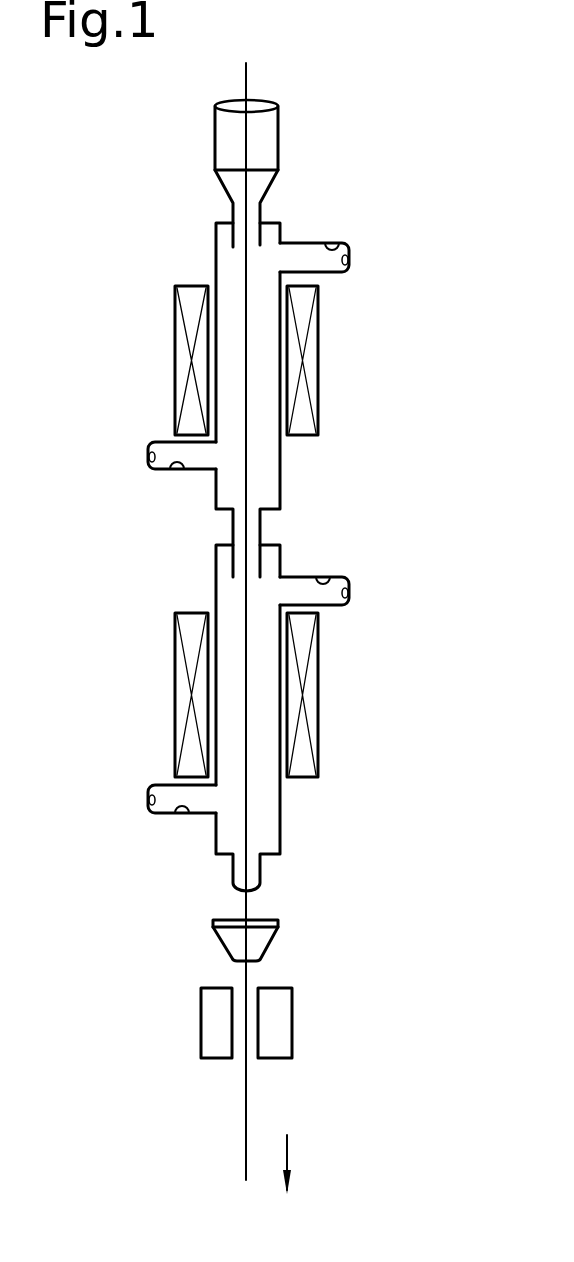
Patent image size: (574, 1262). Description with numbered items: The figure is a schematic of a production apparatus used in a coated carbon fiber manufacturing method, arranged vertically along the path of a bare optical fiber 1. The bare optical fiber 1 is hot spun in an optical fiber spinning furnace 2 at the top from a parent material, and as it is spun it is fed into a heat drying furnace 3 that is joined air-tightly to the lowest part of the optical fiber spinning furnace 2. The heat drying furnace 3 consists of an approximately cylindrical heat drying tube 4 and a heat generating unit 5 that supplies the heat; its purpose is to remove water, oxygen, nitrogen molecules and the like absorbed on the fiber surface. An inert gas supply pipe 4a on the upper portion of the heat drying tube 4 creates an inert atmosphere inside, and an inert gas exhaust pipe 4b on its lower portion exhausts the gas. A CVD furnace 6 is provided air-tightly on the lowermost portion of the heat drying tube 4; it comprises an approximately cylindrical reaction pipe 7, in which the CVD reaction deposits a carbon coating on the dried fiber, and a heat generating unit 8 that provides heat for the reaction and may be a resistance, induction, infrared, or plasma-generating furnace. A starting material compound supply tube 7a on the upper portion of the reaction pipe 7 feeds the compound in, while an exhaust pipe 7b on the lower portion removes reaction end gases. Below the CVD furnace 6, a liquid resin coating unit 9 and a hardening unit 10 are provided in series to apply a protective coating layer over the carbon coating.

The bare optical fiber 1 is at (248, 183).
The optical fiber spinning furnace 2 is at (278, 130).
The heat drying furnace 3 is at (84, 253).
The heat drying tube 4 is at (223, 260).
The inert gas supply pipe 4a is at (342, 243).
The inert gas exhaust pipe 4b is at (163, 470).
The heat generating unit 5 is at (183, 350).
The CVD furnace 6 is at (88, 708).
The reaction pipe 7 is at (223, 598).
The starting material compound supply tube 7a is at (330, 577).
The exhaust pipe 7b is at (167, 814).
The heat generating unit 8 is at (183, 695).
The liquid resin coating unit 9 is at (258, 943).
The hardening unit 10 is at (285, 1020).